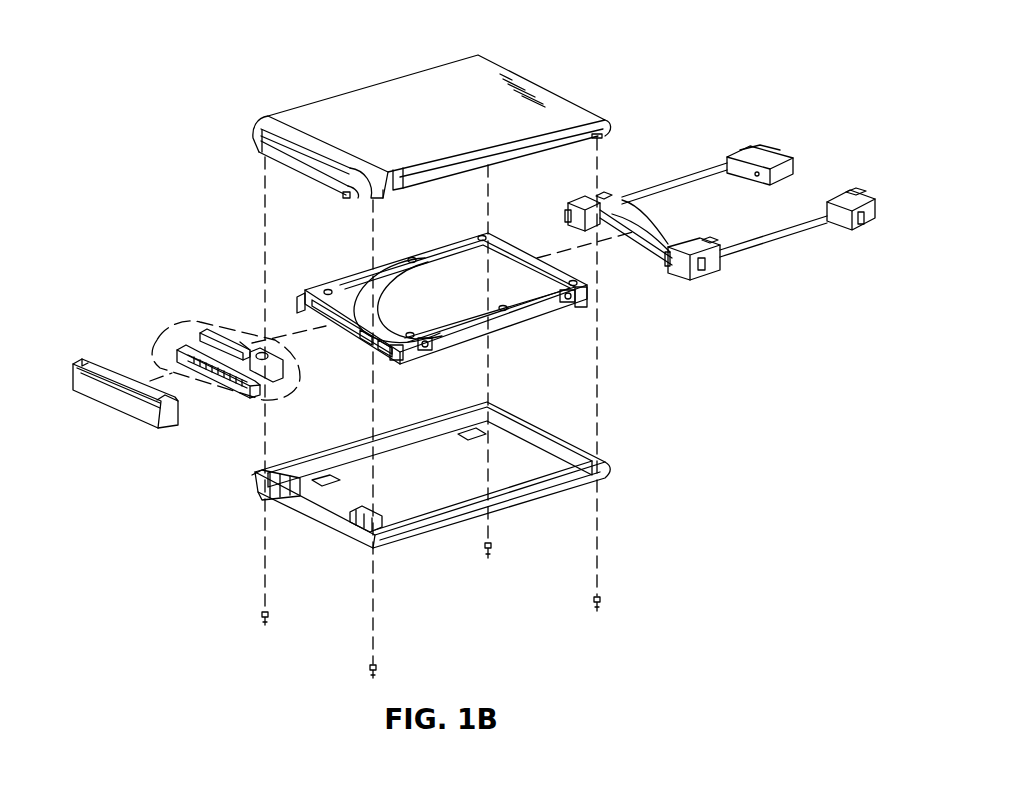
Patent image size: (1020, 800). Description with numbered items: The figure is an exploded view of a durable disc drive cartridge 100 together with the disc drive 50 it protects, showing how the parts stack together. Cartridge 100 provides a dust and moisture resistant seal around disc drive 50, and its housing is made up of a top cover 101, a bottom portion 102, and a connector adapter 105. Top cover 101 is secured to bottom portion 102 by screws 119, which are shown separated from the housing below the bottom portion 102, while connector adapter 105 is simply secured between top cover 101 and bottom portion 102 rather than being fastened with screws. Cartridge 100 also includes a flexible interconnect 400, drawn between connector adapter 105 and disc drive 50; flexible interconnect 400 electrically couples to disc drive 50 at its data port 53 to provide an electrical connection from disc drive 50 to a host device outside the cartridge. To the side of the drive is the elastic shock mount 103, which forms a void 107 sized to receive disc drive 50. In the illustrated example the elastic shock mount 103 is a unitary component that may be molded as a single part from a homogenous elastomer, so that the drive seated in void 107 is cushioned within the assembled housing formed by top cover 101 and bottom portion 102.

The cartridge 100 is at (150, 113).
The top cover 101 is at (396, 134).
The bottom portion 102 is at (412, 481).
The disc drive 50 is at (438, 297).
The data port 53 is at (340, 326).
The flexible interconnect 400 is at (206, 325).
The connector adapter 105 is at (121, 378).
The void 107 is at (753, 220).
The elastic shock mount 103 is at (690, 273).
The screws 119 is at (270, 626).